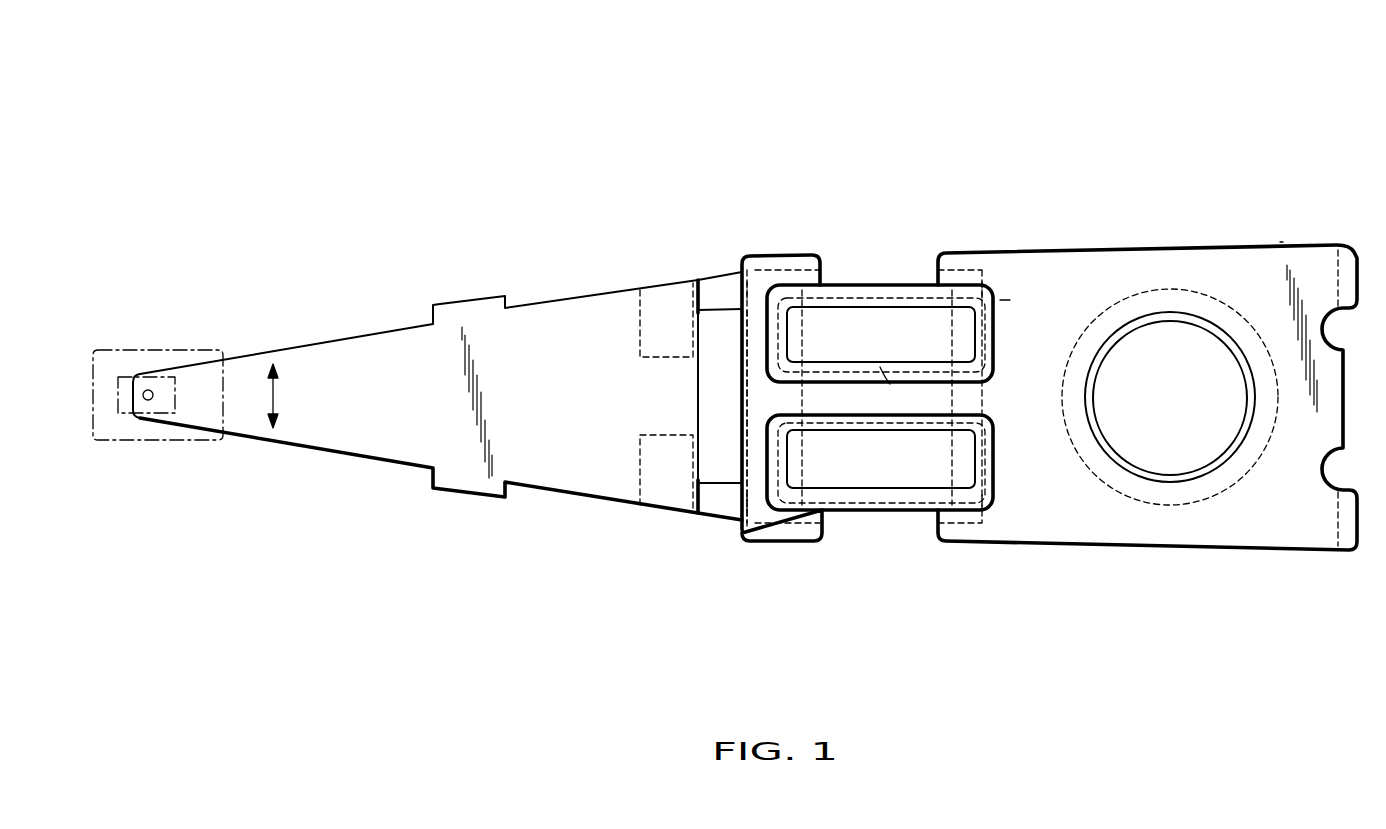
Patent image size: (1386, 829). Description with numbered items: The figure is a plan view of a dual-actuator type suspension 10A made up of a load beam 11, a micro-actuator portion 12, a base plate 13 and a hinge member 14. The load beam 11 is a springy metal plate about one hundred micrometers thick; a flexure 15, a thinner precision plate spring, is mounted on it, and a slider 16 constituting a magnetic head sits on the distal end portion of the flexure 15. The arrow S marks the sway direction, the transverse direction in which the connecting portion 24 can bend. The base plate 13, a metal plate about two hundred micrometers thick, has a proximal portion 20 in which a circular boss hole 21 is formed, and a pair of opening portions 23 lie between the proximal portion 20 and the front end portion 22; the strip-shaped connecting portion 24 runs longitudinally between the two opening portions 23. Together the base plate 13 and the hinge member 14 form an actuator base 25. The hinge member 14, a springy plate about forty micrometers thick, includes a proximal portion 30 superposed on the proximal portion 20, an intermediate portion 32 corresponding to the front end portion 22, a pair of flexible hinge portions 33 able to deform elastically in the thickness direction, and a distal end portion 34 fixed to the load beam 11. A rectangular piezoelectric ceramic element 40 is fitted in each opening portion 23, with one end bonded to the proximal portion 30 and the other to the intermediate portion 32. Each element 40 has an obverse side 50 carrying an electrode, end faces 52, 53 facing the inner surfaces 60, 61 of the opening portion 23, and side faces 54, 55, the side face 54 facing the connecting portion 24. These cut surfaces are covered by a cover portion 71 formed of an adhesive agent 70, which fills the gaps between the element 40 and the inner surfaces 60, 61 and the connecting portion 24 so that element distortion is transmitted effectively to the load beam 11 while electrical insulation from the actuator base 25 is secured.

The suspension 10A is at (514, 114).
The load beam 11 is at (390, 345).
The micro-actuator portion 12 is at (1012, 298).
The base plate 13 is at (1292, 235).
The hinge member 14 is at (755, 255).
The flexure 15 is at (190, 348).
The slider 16 is at (122, 376).
The proximal portion 20 is at (1122, 270).
The boss hole 21 is at (1180, 325).
The front end portion 22 is at (760, 390).
The opening portion 23 is at (923, 268).
The connecting portion 24 is at (850, 330).
The actuator base 25 is at (1044, 556).
The proximal portion 30 is at (1218, 522).
The intermediate portion 32 is at (740, 527).
The flexible hinge portion 33 is at (712, 290).
The distal end portion 34 is at (648, 318).
The piezoelectric ceramic element 40 is at (838, 393).
The obverse side 50 is at (937, 348).
The end face 52 is at (993, 335).
The end face 53 is at (760, 343).
The side face 54 is at (893, 384).
The side face 55 is at (892, 297).
The inner surface 60 is at (978, 290).
The inner surface 61 is at (776, 272).
The adhesive agent 70 is at (803, 284).
The cover portion 71 is at (872, 293).
The sway direction S is at (270, 397).